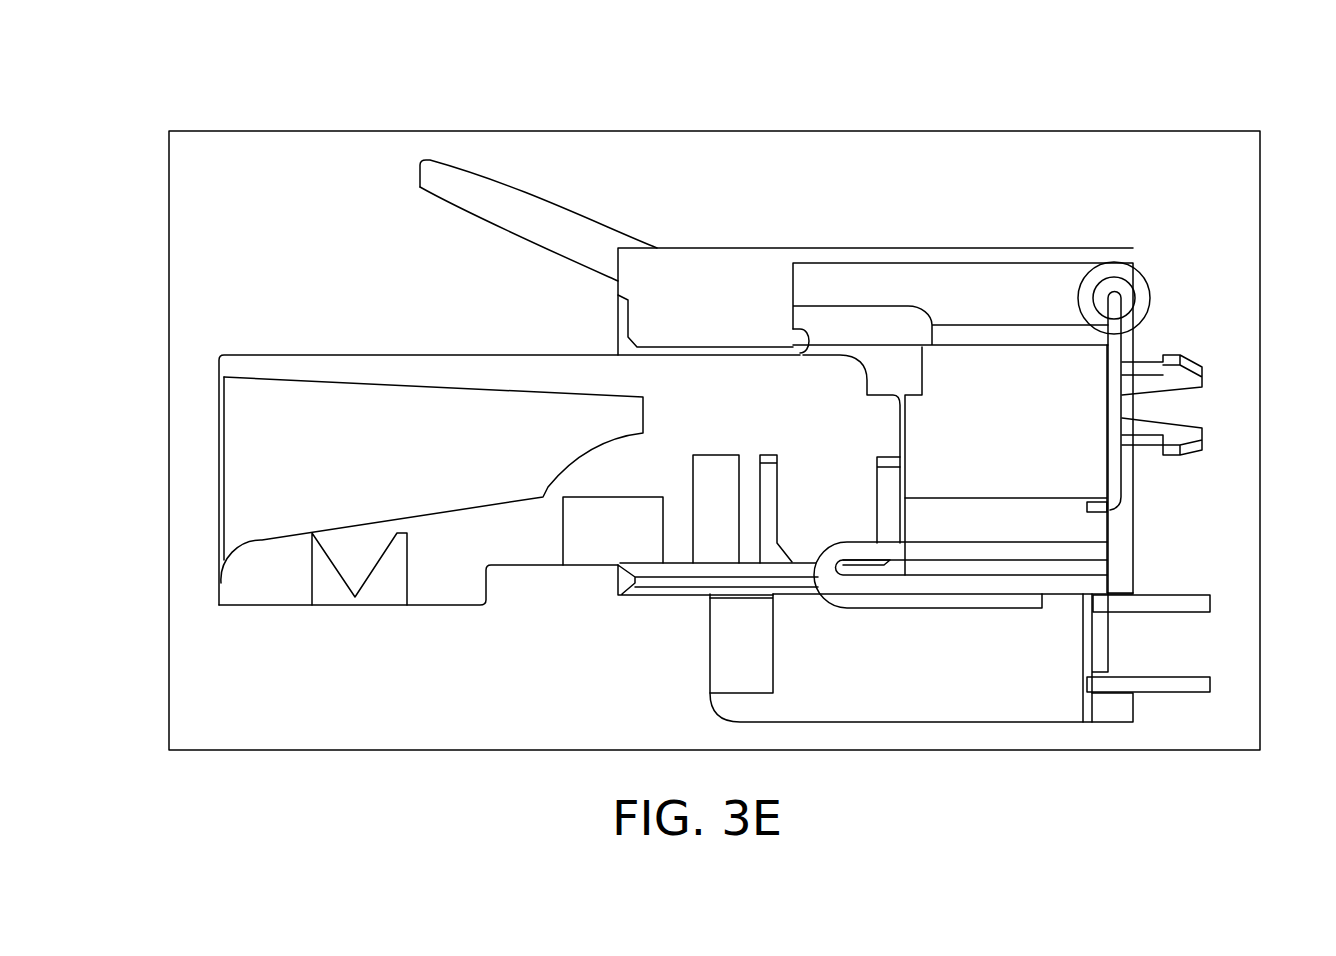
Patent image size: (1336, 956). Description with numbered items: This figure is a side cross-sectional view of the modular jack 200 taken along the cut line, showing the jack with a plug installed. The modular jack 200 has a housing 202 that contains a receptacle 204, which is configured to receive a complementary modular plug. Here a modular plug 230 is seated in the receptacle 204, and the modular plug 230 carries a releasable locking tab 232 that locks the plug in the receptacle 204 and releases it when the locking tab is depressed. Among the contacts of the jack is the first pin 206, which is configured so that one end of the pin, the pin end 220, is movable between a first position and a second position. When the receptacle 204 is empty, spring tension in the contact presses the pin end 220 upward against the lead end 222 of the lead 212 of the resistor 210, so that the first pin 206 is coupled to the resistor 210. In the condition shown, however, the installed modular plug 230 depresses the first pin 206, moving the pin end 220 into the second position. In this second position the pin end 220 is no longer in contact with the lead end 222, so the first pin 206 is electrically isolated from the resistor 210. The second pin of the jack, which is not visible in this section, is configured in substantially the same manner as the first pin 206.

The modular jack 200 is at (1060, 247).
The housing 202 is at (709, 283).
The receptacle 204 is at (890, 372).
The Pin 1 206 is at (995, 600).
The resistor 210 is at (1142, 268).
The lead 212 is at (1115, 348).
The pin end 220 is at (1097, 553).
The lead end 222 is at (1100, 507).
The modular plug 230 is at (273, 362).
The releasable locking tab 232 is at (451, 186).